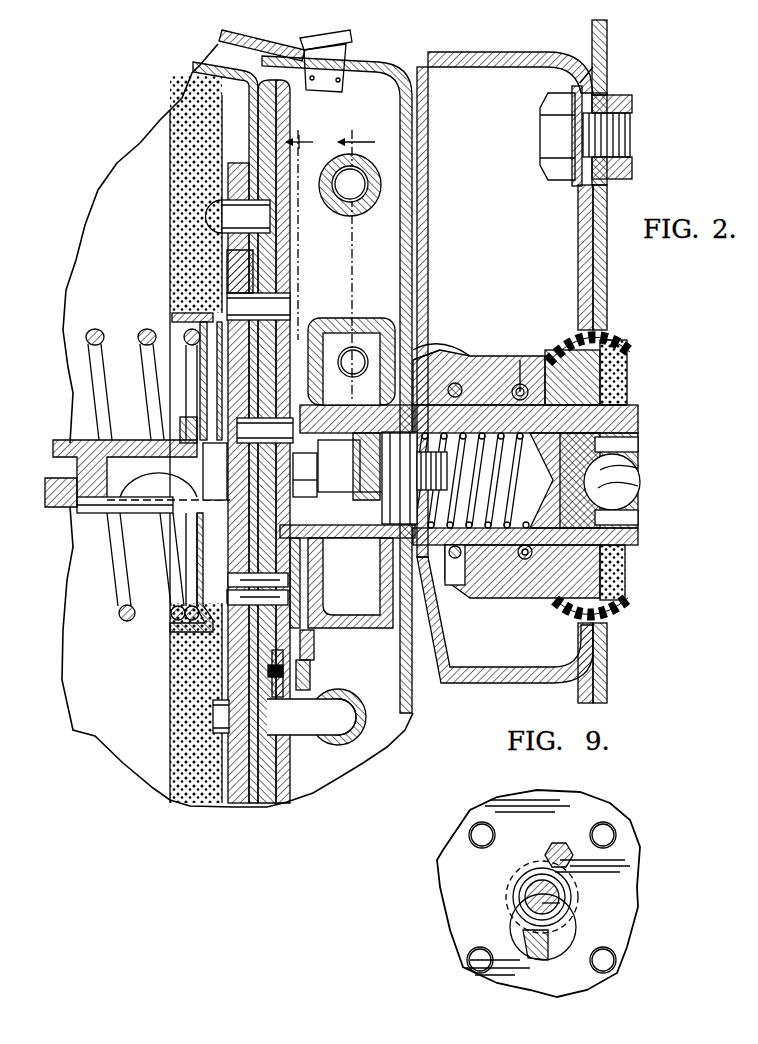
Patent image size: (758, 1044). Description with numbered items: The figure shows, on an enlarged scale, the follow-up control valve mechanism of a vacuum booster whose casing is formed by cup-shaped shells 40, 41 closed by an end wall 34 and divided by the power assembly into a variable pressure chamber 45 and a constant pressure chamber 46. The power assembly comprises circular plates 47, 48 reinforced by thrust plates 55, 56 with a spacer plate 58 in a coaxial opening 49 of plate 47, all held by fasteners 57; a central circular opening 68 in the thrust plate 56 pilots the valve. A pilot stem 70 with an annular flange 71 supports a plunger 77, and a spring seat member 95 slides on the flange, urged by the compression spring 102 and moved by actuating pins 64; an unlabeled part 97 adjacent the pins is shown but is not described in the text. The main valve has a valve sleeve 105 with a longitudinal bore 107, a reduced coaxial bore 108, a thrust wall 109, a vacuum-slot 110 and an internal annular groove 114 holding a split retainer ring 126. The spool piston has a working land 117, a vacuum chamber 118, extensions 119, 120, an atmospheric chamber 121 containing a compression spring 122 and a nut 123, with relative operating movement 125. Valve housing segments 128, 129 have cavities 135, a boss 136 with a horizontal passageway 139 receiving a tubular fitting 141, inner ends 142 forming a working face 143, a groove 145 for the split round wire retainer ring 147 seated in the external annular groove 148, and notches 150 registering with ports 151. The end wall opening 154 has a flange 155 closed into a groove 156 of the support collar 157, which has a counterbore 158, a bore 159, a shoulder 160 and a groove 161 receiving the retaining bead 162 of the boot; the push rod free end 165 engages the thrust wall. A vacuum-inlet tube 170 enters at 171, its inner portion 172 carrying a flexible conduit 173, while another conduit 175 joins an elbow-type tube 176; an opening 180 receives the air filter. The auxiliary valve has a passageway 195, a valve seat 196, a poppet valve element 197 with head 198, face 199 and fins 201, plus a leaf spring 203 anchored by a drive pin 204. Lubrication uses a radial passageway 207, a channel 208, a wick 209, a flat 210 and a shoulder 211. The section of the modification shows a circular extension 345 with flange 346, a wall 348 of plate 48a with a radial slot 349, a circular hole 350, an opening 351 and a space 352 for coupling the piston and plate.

In FIG. 2, the end wall 34 is at (412, 688).
In FIG. 2, the cup-shaped shell 40 is at (150, 790).
In FIG. 2, the cup-shaped shell 41 is at (278, 40).
In FIG. 2, the variable pressure chamber 45 is at (82, 742).
In FIG. 2, the constant pressure chamber 46 is at (332, 800).
In FIG. 2, the circular plate 47 is at (250, 140).
In FIG. 2, the circular plate 48 is at (284, 120).
In FIG. 9, the plate 48a is at (545, 958).
In FIG. 2, the coaxial opening 49 is at (222, 227).
In FIG. 2, the thrust plate 55 is at (232, 178).
In FIG. 2, the thrust plate 56 is at (227, 265).
In FIG. 2, the fastener 57 is at (235, 300).
In FIG. 2, the spacer plate 58 is at (205, 245).
In FIG. 2, the actuating pin 64 is at (228, 428).
In FIG. 2, the central circular opening 68 is at (305, 462).
In FIG. 2, the pilot stem 70 is at (110, 520).
In FIG. 2, the annular flange 71 is at (172, 515).
In FIG. 2, the plunger 77 is at (68, 507).
In FIG. 2, the spring seat member 95 is at (165, 632).
In FIG. 2, the bearing block 97 is at (203, 458).
In FIG. 2, the compression spring 102 is at (119, 611).
In FIG. 2, the valve sleeve 105 is at (640, 535).
In FIG. 2, the longitudinal bore 107 is at (640, 484).
In FIG. 2, the reduced coaxial bore 108 is at (650, 508).
In FIG. 2, the thrust wall 109 is at (640, 470).
In FIG. 2, the vacuum-slot 110 is at (352, 530).
In FIG. 2, the internal annular groove 114 is at (357, 409).
In FIG. 2, the working land 117 is at (372, 492).
In FIG. 2, the vacuum chamber 118 is at (372, 470).
In FIG. 2, the cylindrical extension 119 is at (287, 487).
In FIG. 2, the threaded extension 120 is at (527, 588).
In FIG. 2, the atmospheric chamber 121 is at (535, 450).
In FIG. 2, the compression spring 122 is at (618, 566).
In FIG. 2, the nut 123 is at (372, 537).
In FIG. 2, the relative operating movement 125 is at (302, 390).
In FIG. 2, the split retainer ring 126 is at (330, 448).
In FIG. 2, the upper valve housing segment 128 is at (372, 330).
In FIG. 2, the lower valve housing segment 129 is at (383, 632).
In FIG. 2, the arcuate cavity 135 is at (395, 452).
In FIG. 2, the boss 136 is at (425, 270).
In FIG. 2, the horizontal passageway 139 is at (355, 372).
In FIG. 2, the tubular fitting 141 is at (356, 335).
In FIG. 2, the inner ends 142 is at (333, 314).
In FIG. 2, the working face 143 is at (345, 545).
In FIG. 2, the semicircular internal groove 145 is at (447, 596).
In FIG. 2, the split round wire retainer ring 147 is at (455, 392).
In FIG. 2, the external annular groove 148 is at (482, 355).
In FIG. 2, the notch 150 is at (472, 580).
In FIG. 2, the port 151 is at (475, 576).
In FIG. 2, the circular opening 154 is at (432, 372).
In FIG. 2, the outturned circular flange 155 is at (472, 335).
In FIG. 2, the external annular groove 156 is at (465, 592).
In FIG. 2, the support collar 157 is at (615, 382).
In FIG. 2, the inner counterbore 158 is at (453, 676).
In FIG. 2, the longitudinal bore 159 is at (625, 400).
In FIG. 2, the annular shoulder 160 is at (522, 360).
In FIG. 2, the external annular groove 161 is at (622, 362).
In FIG. 2, the retaining bead 162 is at (605, 340).
In FIG. 2, the free end of push rod 165 is at (640, 455).
In FIG. 2, the vacuum-inlet tube 170 is at (338, 212).
In FIG. 2, the tube projection point 171 is at (348, 156).
In FIG. 2, the inner projecting portion 172 is at (362, 208).
In FIG. 2, the flexible conduit 173 is at (373, 188).
In FIG. 2, the flexible conduit 175 is at (352, 722).
In FIG. 2, the elbow-type tube 176 is at (322, 768).
In FIG. 2, the opening 180 is at (380, 62).
In FIG. 2, the longitudinal circular passageway 195 is at (258, 598).
In FIG. 2, the valve seat 196 is at (258, 606).
In FIG. 2, the poppet-type valve element 197 is at (175, 626).
In FIG. 2, the head 198 is at (308, 640).
In FIG. 2, the complemental face 199 is at (308, 658).
In FIG. 2, the fins 201 is at (222, 612).
In FIG. 2, the flat leaf spring 203 is at (340, 610).
In FIG. 2, the drive pin 204 is at (292, 678).
In FIG. 2, the radial passageway 207 is at (540, 376).
In FIG. 2, the internal annular channel 208 is at (546, 362).
In FIG. 2, the wick 209 is at (570, 600).
In FIG. 2, the flat 210 is at (550, 350).
In FIG. 2, the shoulder 211 is at (650, 415).
In FIG. 9, the reduced diameter circular extension 345 is at (562, 893).
In FIG. 9, the annular outstanding flange 346 is at (560, 914).
In FIG. 9, the wall 348 is at (520, 890).
In FIG. 9, the radial slot 349 is at (510, 900).
In FIG. 9, the circular hole 350 is at (553, 957).
In FIG. 9, the opening 351 is at (513, 912).
In FIG. 9, the space 352 is at (560, 843).